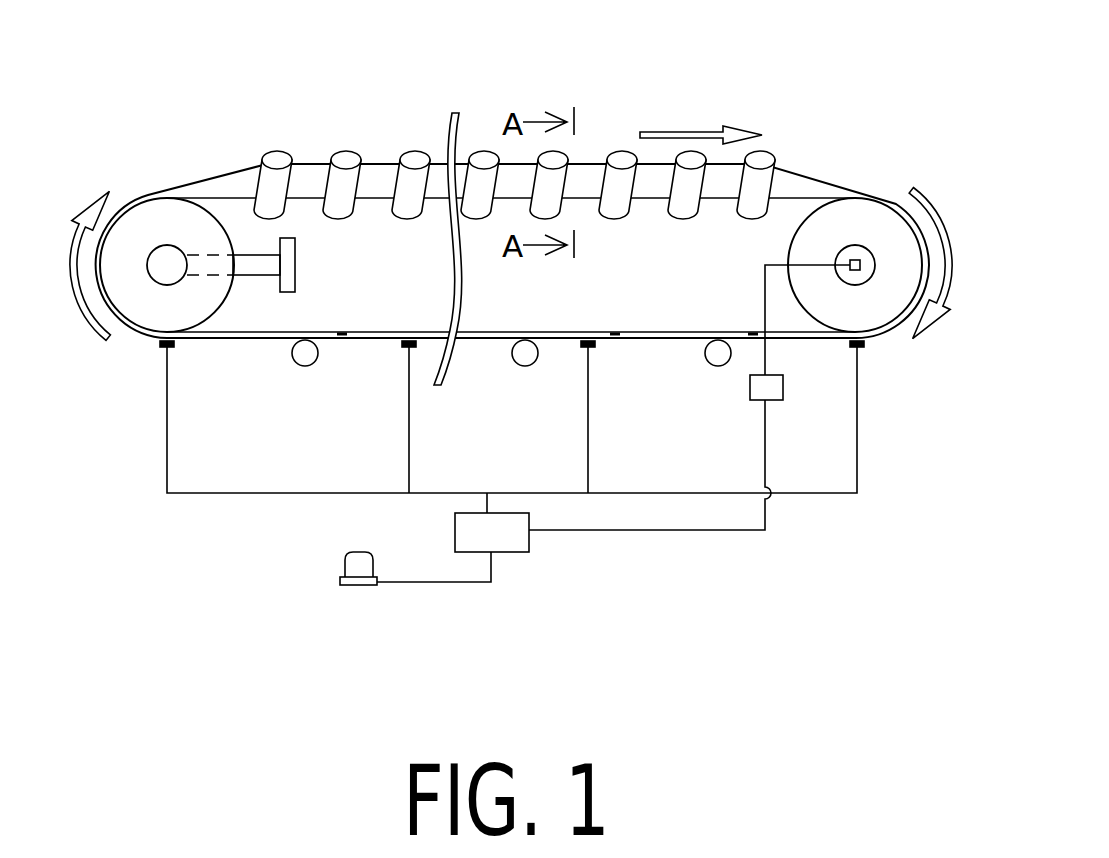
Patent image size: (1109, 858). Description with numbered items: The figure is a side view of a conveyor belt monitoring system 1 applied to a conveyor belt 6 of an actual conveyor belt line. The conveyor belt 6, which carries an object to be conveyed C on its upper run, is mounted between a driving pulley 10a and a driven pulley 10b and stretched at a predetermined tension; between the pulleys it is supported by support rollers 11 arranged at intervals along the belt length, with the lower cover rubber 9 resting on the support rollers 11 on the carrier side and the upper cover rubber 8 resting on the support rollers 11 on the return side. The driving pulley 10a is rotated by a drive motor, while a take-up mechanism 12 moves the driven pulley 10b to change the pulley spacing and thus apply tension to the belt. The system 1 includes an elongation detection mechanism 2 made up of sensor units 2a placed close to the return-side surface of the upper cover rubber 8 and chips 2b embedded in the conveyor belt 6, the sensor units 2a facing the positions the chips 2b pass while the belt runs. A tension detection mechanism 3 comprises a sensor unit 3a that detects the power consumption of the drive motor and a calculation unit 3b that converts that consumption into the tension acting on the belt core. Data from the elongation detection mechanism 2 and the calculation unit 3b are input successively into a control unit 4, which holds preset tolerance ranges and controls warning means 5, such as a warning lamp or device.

The conveyor belt monitoring system 1 is at (707, 570).
The elongation detection mechanism 2 is at (647, 418).
The sensor units 2a is at (580, 348).
The chips 2b is at (615, 342).
The tension detection mechanism 3 is at (942, 352).
The sensor unit 3a is at (858, 277).
The calculation unit 3b is at (775, 395).
The control unit 4 is at (512, 545).
The warning means 5 is at (350, 567).
The conveyor belt 6 is at (821, 150).
The upper cover rubber 8 is at (657, 342).
The lower cover rubber 9 is at (685, 333).
The driving pulley 10a is at (858, 225).
The driven pulley 10b is at (150, 215).
The support rollers 11 is at (307, 366).
The take-up mechanism 12 is at (252, 275).
The object to be conveyed C is at (268, 38).